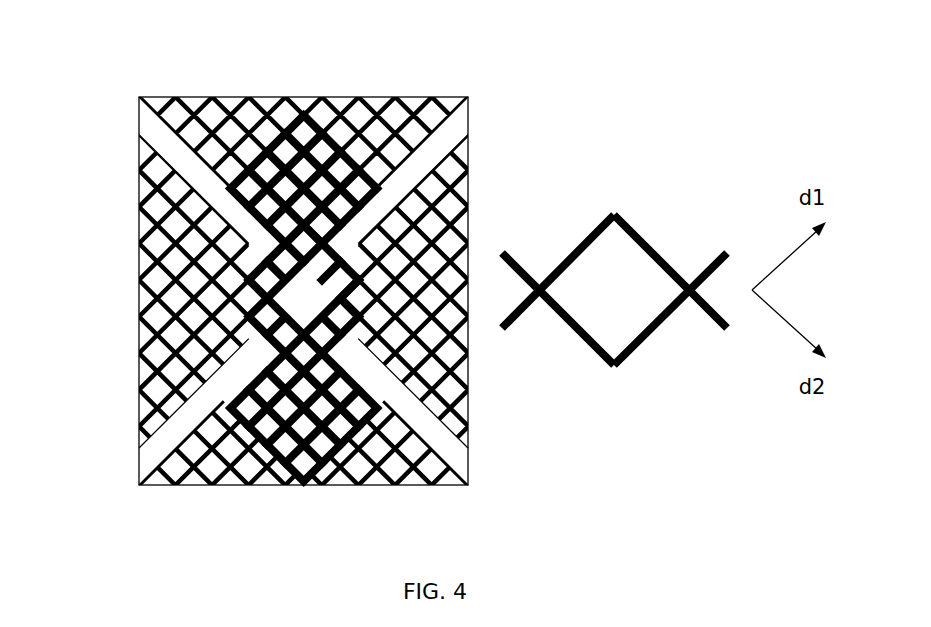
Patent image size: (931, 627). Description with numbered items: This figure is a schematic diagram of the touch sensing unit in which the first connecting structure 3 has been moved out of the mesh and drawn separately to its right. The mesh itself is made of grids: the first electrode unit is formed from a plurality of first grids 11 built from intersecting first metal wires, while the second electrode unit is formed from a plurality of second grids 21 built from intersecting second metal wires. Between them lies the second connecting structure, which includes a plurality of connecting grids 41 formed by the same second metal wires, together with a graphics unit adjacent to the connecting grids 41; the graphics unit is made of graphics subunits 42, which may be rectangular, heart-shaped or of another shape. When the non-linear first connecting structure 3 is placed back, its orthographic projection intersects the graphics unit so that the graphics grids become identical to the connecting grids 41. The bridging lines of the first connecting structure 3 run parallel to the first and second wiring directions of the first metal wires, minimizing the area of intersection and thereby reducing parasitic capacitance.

The first grids 11 is at (150, 168).
The second grids 21 is at (213, 108).
The first connecting structure 3 is at (514, 323).
The connecting grids 41 is at (338, 440).
The graphics subunits 42 is at (306, 110).